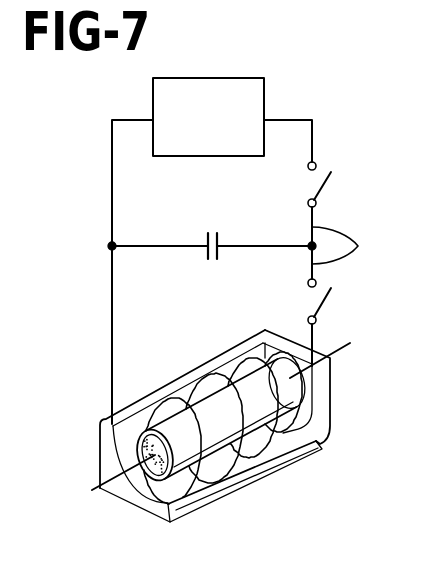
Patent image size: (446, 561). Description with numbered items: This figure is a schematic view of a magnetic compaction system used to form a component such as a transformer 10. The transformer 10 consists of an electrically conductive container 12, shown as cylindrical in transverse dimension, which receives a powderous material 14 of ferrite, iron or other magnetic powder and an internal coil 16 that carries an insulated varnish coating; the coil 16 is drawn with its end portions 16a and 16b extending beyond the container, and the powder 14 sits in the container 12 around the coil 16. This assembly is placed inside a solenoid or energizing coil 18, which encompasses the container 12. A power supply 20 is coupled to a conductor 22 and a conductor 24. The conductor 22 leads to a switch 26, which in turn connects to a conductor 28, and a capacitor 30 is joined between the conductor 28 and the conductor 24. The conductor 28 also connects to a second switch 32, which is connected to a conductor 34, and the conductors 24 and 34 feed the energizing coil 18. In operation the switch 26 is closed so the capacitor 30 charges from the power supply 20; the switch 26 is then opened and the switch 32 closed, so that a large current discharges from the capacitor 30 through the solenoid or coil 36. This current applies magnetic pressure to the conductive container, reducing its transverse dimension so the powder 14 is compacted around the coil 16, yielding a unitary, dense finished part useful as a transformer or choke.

The transformer 10 is at (217, 441).
The electrically conductive container 12 is at (219, 450).
The powderous material 14 is at (154, 465).
The internal coil 16 is at (217, 449).
The wire front end 16a is at (98, 463).
The wire rear end 16b is at (350, 343).
The solenoid or energizing coil 18 is at (284, 447).
The power supply 20 is at (238, 78).
The conductor 22 is at (314, 132).
The conductor 24 is at (112, 190).
The switch 26 is at (326, 183).
The conductor 28 is at (358, 246).
The capacitor 30 is at (219, 232).
The switch 32 is at (326, 300).
The conductor 34 is at (308, 337).
The solenoid or coil 36 is at (98, 440).